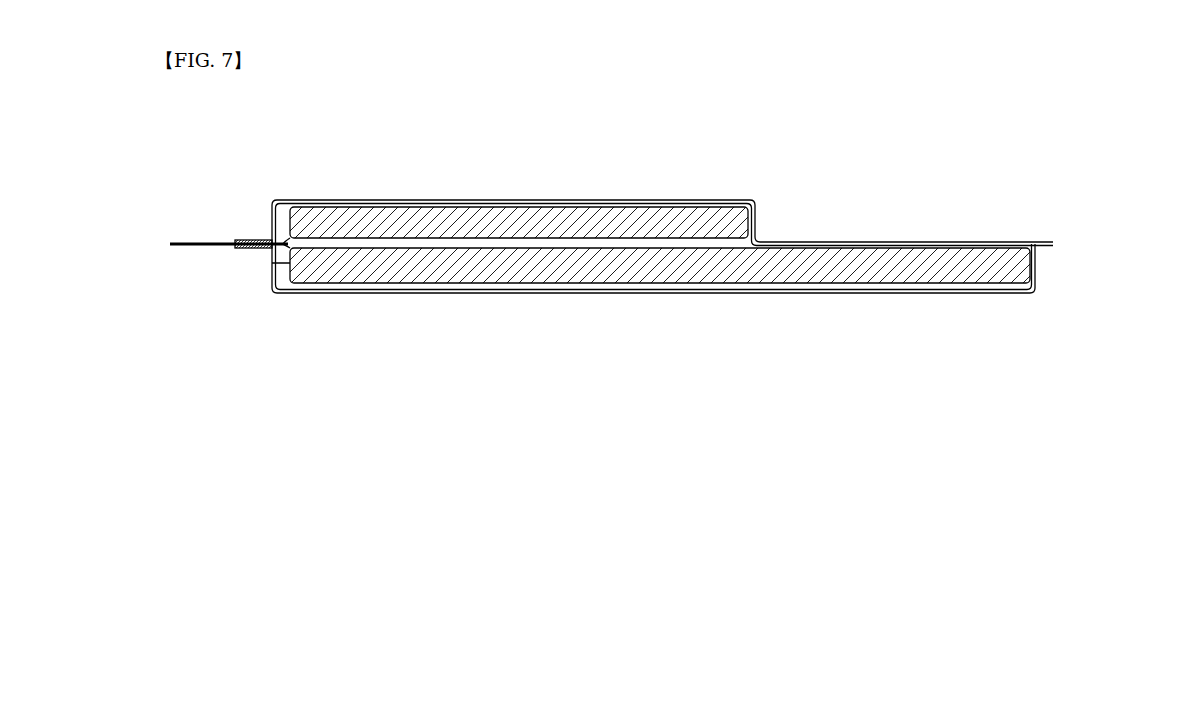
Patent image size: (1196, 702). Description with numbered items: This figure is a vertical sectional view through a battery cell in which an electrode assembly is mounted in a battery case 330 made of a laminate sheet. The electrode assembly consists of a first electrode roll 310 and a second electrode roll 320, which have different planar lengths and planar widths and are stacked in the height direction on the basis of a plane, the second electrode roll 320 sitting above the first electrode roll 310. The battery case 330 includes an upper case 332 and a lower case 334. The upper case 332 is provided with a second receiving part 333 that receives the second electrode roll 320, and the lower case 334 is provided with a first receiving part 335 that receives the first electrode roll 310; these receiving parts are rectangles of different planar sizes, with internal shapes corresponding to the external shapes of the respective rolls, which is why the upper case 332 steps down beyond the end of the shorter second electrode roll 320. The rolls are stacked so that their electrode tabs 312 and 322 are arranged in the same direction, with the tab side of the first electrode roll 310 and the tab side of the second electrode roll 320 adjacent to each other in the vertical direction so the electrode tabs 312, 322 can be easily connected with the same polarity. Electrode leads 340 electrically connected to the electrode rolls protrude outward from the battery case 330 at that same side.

The first electrode roll 310 is at (890, 264).
The electrode tabs 312 is at (272, 263).
The second electrode roll 320 is at (632, 211).
The electrode tabs 322 is at (284, 244).
The battery case 330 is at (728, 258).
The upper case 332 is at (1002, 243).
The second receiving part 333 is at (759, 218).
The lower case 334 is at (1003, 292).
The first receiving part 335 is at (510, 290).
The electrode leads 340 is at (190, 246).